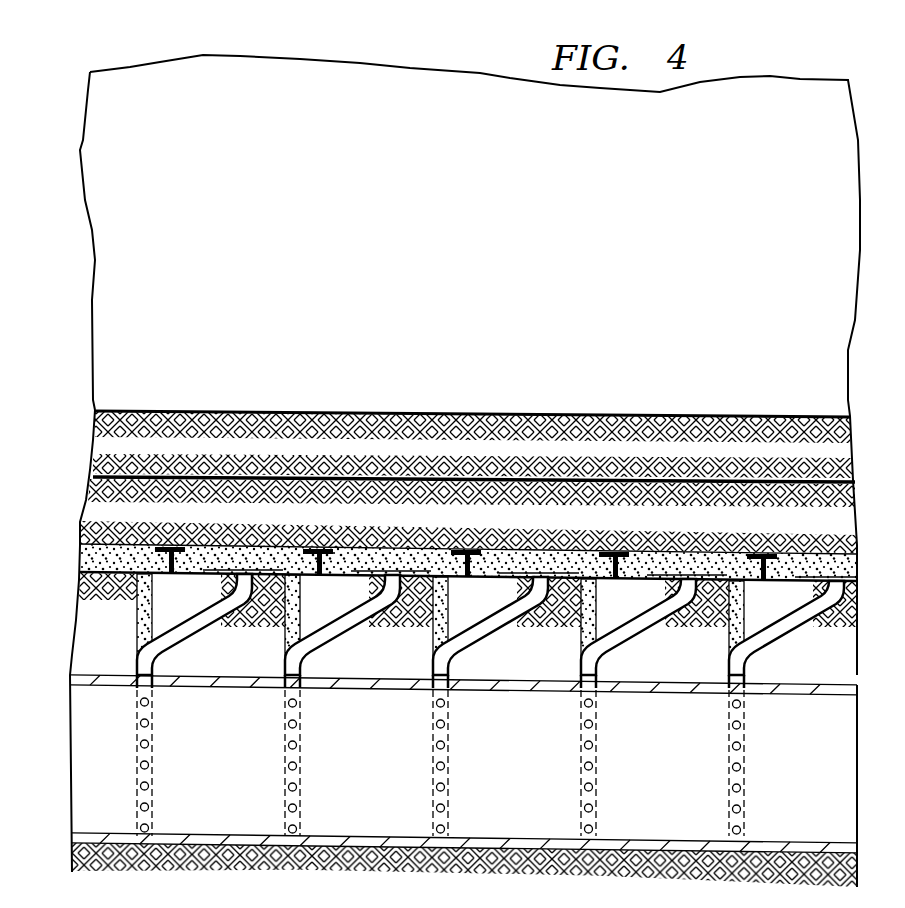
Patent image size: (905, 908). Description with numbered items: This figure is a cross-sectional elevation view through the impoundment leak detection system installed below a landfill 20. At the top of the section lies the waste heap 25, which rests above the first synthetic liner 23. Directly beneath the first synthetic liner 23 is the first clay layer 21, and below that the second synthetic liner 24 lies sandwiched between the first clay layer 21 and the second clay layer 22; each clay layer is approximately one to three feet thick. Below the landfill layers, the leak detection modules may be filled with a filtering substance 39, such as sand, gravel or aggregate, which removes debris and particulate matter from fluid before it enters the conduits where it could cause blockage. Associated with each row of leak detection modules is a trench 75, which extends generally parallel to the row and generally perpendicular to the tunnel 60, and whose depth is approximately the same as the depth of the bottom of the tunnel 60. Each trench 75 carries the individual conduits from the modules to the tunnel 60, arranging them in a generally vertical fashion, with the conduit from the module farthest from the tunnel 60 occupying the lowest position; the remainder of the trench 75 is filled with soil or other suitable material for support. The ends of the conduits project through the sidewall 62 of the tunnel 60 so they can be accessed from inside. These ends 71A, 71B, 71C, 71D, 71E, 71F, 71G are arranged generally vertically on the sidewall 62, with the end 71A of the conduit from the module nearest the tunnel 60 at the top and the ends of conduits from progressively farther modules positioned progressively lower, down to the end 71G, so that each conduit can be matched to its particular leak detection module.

The landfill 20 is at (410, 65).
The first clay layer 21 is at (850, 443).
The second clay layer 22 is at (852, 512).
The first synthetic liner 23 is at (650, 411).
The second synthetic liner 24 is at (311, 475).
The waste heap 25 is at (173, 57).
The filtering substance 39 is at (230, 545).
The tunnel 60 is at (857, 755).
The sidewall 62 is at (80, 712).
The end of conduit 71A is at (593, 706).
The end of conduit 71B is at (584, 723).
The end of conduit 71C is at (593, 748).
The end of conduit 71D is at (584, 766).
The end of conduit 71E is at (593, 790).
The end of conduit 71F is at (584, 808).
The end of conduit 71G is at (593, 830).
The trench 75 is at (135, 650).